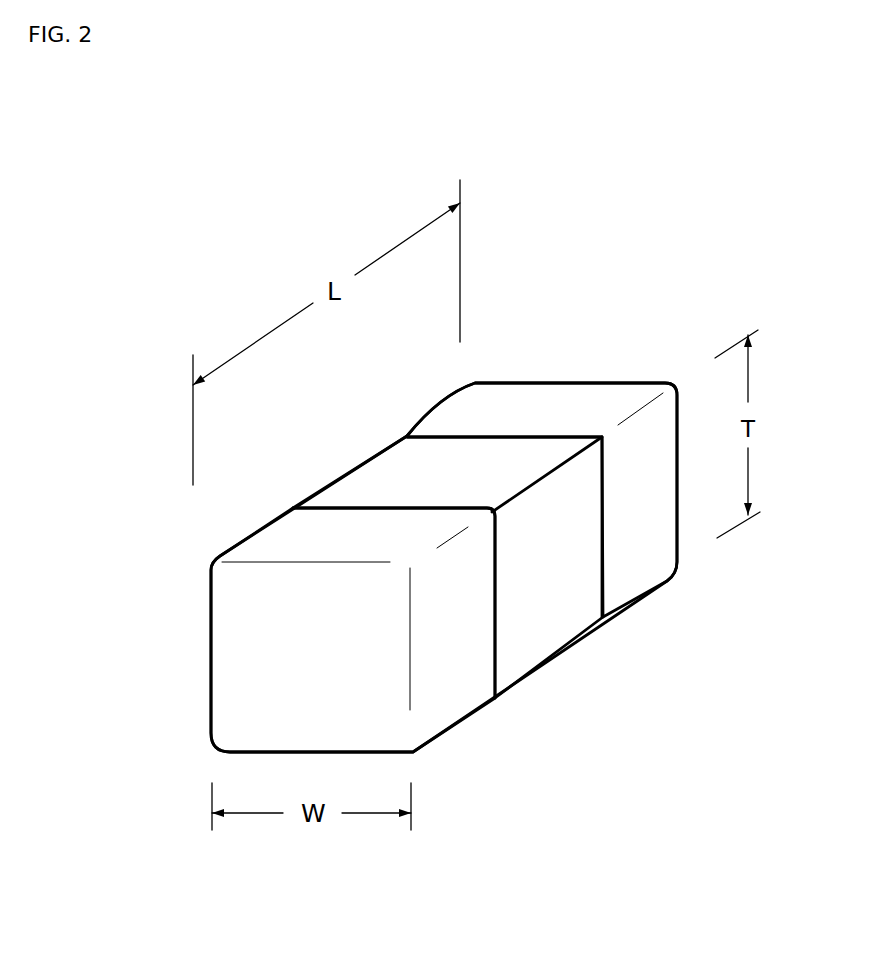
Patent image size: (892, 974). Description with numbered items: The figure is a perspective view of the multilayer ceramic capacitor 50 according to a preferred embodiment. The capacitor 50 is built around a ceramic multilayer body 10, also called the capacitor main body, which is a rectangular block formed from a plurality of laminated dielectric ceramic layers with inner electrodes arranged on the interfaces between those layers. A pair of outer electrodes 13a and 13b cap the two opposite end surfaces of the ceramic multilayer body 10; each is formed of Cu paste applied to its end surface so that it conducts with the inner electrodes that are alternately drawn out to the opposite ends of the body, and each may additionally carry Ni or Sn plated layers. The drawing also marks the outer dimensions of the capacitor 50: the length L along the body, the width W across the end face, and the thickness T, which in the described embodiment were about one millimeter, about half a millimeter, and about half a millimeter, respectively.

The multilayer ceramic capacitor 50 is at (643, 312).
The ceramic multilayer body 10 is at (557, 648).
The outer electrode 13a is at (573, 383).
The outer electrode 13b is at (272, 647).